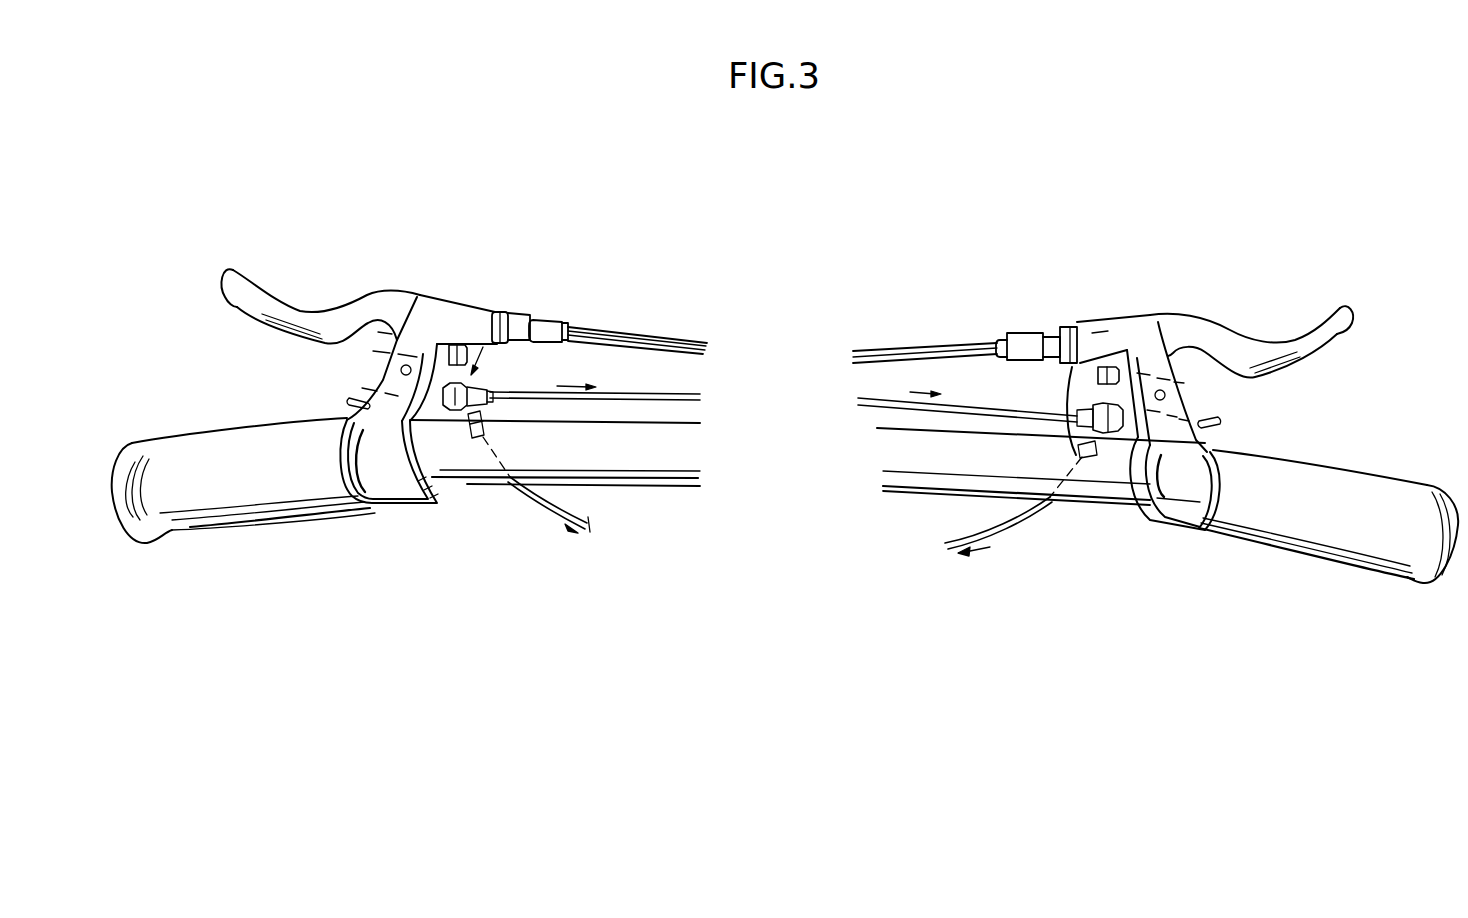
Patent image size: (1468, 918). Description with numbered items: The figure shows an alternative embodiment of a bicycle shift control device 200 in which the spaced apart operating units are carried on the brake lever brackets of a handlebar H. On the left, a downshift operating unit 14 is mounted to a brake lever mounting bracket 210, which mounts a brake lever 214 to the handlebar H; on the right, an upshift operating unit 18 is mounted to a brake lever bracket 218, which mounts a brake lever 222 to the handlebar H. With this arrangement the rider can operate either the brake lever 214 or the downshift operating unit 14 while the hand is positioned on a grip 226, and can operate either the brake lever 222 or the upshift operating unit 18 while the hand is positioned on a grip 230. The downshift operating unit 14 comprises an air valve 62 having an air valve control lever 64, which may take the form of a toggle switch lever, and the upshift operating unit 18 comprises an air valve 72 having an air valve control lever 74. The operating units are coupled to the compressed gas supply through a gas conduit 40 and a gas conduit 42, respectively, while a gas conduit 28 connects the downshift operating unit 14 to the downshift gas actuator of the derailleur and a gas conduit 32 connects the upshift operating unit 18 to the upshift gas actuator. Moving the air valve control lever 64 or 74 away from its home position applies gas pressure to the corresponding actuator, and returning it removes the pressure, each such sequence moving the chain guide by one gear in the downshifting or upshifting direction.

The bicycle shift control device 200 is at (723, 248).
The handlebar H is at (468, 475).
The brake lever mounting bracket 210 is at (450, 310).
The brake lever 214 is at (282, 312).
The brake lever bracket 218 is at (1117, 325).
The brake lever 222 is at (1303, 353).
The grip 226 is at (232, 442).
The grip 230 is at (1340, 547).
The downshift operating unit 14 is at (503, 325).
The upshift operating unit 18 is at (1050, 336).
The gas conduit 40 is at (627, 394).
The gas conduit 42 is at (1007, 403).
The air valve 62 is at (482, 380).
The air valve 72 is at (1076, 455).
The gas conduit 28 is at (540, 507).
The gas conduit 32 is at (953, 543).
The air valve control lever 64 is at (353, 402).
The air valve control lever 74 is at (1213, 420).